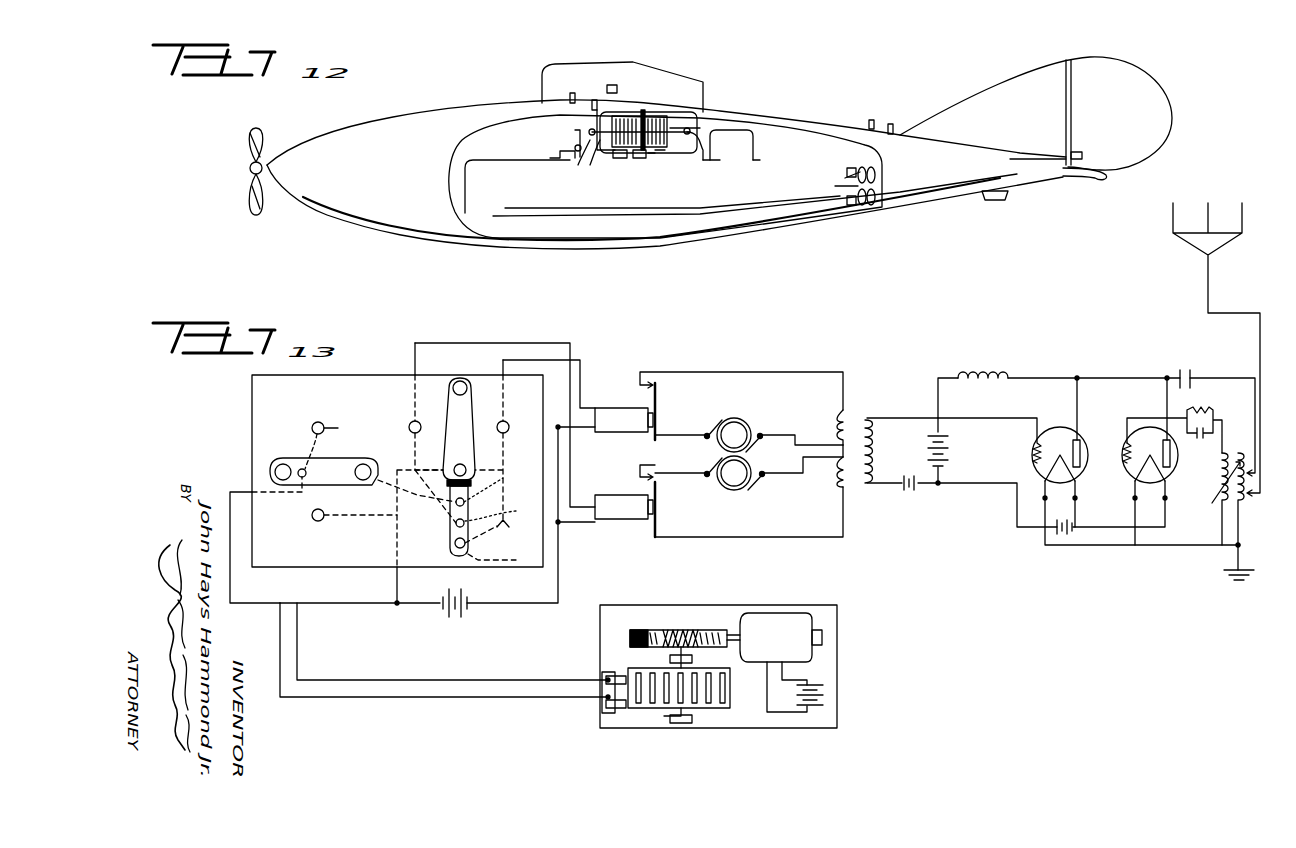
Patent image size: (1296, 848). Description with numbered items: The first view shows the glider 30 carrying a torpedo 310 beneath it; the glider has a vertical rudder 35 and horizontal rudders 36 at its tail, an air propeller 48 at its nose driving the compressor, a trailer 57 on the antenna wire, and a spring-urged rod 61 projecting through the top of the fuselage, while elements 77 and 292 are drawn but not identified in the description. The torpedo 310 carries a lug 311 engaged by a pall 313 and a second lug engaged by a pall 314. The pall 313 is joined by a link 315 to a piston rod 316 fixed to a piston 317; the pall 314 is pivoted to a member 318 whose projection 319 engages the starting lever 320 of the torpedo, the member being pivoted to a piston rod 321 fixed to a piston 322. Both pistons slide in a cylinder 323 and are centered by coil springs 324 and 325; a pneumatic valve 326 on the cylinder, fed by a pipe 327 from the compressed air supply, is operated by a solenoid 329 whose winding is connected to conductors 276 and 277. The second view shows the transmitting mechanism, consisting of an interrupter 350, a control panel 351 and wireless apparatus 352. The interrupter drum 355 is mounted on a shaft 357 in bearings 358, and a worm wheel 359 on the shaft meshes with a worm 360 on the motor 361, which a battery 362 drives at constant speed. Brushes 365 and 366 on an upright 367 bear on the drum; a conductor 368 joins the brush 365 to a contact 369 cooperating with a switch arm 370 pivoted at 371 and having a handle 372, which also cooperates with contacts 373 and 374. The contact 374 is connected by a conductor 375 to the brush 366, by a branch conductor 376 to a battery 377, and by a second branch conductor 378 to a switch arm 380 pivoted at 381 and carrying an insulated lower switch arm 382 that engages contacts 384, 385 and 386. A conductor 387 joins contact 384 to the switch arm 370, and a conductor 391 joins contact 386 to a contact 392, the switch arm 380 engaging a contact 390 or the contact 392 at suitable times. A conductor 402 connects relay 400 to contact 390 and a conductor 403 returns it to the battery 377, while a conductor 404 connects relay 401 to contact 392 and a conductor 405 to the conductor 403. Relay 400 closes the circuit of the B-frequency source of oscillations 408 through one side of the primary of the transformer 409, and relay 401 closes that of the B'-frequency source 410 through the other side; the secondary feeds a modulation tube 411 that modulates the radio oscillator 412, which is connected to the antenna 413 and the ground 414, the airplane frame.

In FIG. 12, the gliding aircraft 30 is at (368, 224).
In FIG. 12, the vertical rudder 35 is at (1160, 136).
In FIG. 12, the horizontal rudders 36 is at (1097, 179).
In FIG. 12, the air propeller 48 is at (247, 140).
In FIG. 12, the trailer 57 is at (1003, 201).
In FIG. 12, the rod 61 is at (874, 121).
In FIG. 12, the conning tower 77 is at (566, 96).
In FIG. 12, the conductor 276 is at (594, 104).
In FIG. 12, the conductor 277 is at (630, 115).
In FIG. 12, the antenna support 292 is at (892, 124).
In FIG. 12, the torpedo 310 is at (490, 217).
In FIG. 12, the lug 311 is at (553, 158).
In FIG. 12, the pall 313 is at (570, 134).
In FIG. 12, the pall 314 is at (708, 145).
In FIG. 12, the link 315 is at (575, 150).
In FIG. 12, the piston rod 316 is at (598, 152).
In FIG. 12, the piston 317 is at (650, 120).
In FIG. 12, the member 318 is at (715, 148).
In FIG. 12, the projection 319 is at (753, 137).
In FIG. 12, the starting lever 320 is at (768, 163).
In FIG. 12, the piston rod 321 is at (688, 128).
In FIG. 12, the piston 322 is at (650, 155).
In FIG. 12, the cylinder 323 is at (640, 117).
In FIG. 12, the coil spring 324 is at (645, 118).
In FIG. 12, the coil spring 325 is at (667, 125).
In FIG. 12, the pneumatic valve 326 is at (640, 152).
In FIG. 12, the pipe 327 is at (655, 150).
In FIG. 12, the solenoid 329 is at (618, 152).
In FIG. 13, the interrupter 350 is at (718, 686).
In FIG. 13, the control panel 351 is at (397, 460).
In FIG. 13, the wireless apparatus 352 is at (1061, 457).
In FIG. 13, the drum 355 is at (722, 680).
In FIG. 13, the shaft 357 is at (664, 716).
In FIG. 13, the bearings 358 is at (668, 659).
In FIG. 13, the worm wheel 359 is at (640, 630).
In FIG. 13, the worm 360 is at (668, 630).
In FIG. 13, the motor 361 is at (775, 625).
In FIG. 13, the battery 362 is at (822, 697).
In FIG. 13, the brush 365 is at (602, 710).
In FIG. 13, the brush 366 is at (606, 676).
In FIG. 13, the upright 367 is at (602, 674).
In FIG. 13, the conductor 368 is at (232, 492).
In FIG. 13, the contact 369 is at (300, 462).
In FIG. 13, the switch arm 370 is at (322, 458).
In FIG. 13, the pivot 371 is at (358, 482).
In FIG. 13, the handle 372 is at (275, 468).
In FIG. 13, the contact 373 is at (338, 428).
In FIG. 13, the contact 374 is at (313, 515).
In FIG. 13, the conductor 375 is at (322, 604).
In FIG. 13, the branch conductor 376 is at (398, 608).
In FIG. 13, the battery 377 is at (448, 595).
In FIG. 13, the second branch conductor 378 is at (410, 469).
In FIG. 13, the switch arm 380 is at (453, 414).
In FIG. 13, the pivot 381 is at (475, 480).
In FIG. 13, the lower switch arm 382 is at (504, 510).
In FIG. 13, the contact 384 is at (455, 545).
In FIG. 13, the contact 385 is at (516, 493).
In FIG. 13, the contact 386 is at (506, 555).
In FIG. 13, the conductor 387 is at (432, 525).
In FIG. 13, the contact 390 is at (410, 423).
In FIG. 13, the conductor 391 is at (509, 528).
In FIG. 13, the contact 392 is at (505, 433).
In FIG. 13, the relay 400 is at (620, 412).
In FIG. 13, the relay 401 is at (630, 508).
In FIG. 13, the conductor 402 is at (440, 343).
In FIG. 13, the conductor 403 is at (582, 427).
In FIG. 13, the conductor 404 is at (530, 357).
In FIG. 13, the conductor 405 is at (575, 522).
In FIG. 13, the source of oscillations 408 is at (738, 420).
In FIG. 13, the transformer 409 is at (860, 418).
In FIG. 13, the source of oscillations 410 is at (725, 480).
In FIG. 13, the modulation tube 411 is at (1058, 430).
In FIG. 13, the radio oscillator 412 is at (1132, 432).
In FIG. 13, the antenna 413 is at (1190, 238).
In FIG. 13, the ground 414 is at (1235, 580).